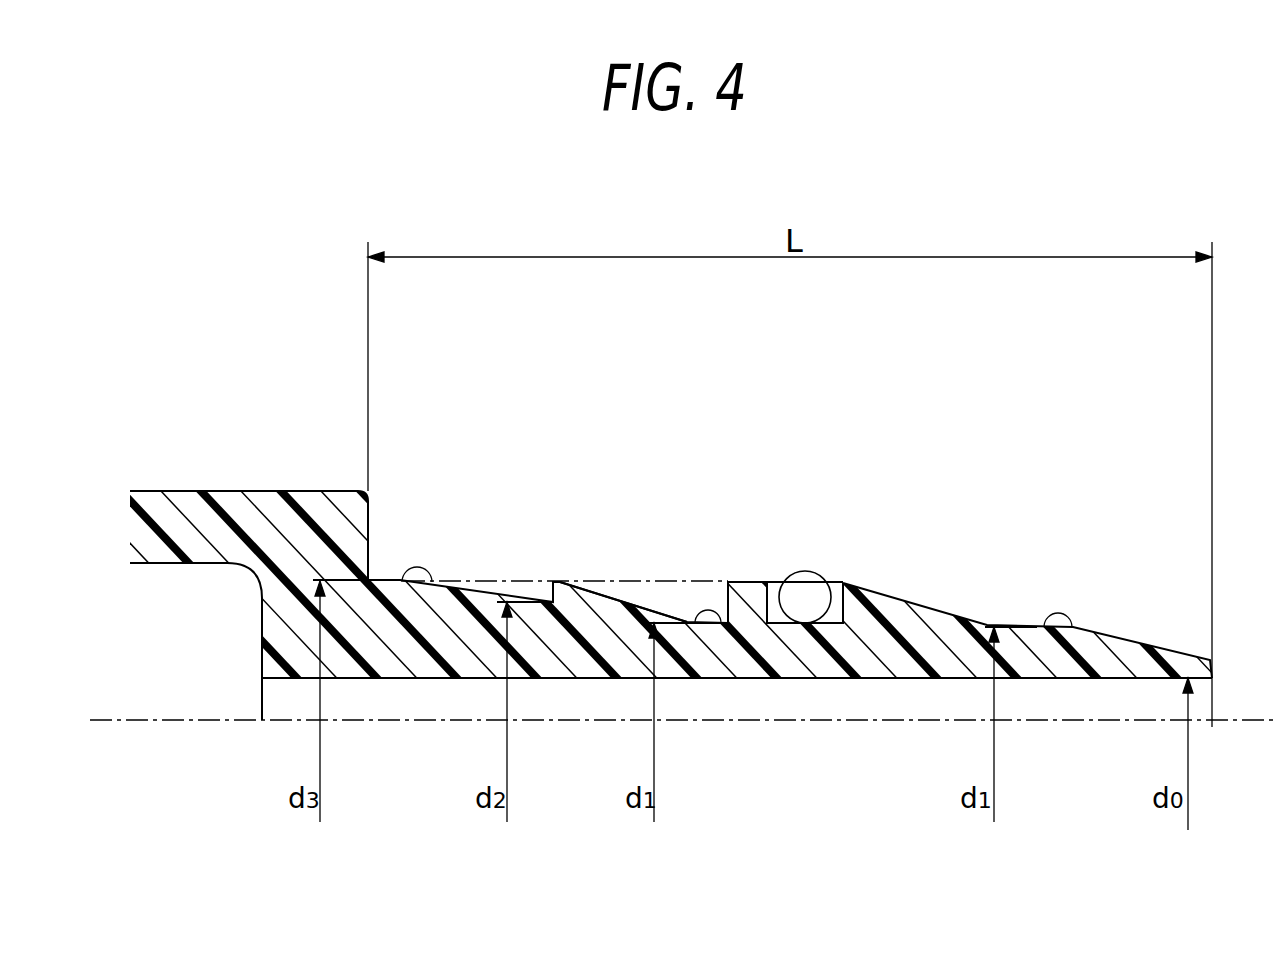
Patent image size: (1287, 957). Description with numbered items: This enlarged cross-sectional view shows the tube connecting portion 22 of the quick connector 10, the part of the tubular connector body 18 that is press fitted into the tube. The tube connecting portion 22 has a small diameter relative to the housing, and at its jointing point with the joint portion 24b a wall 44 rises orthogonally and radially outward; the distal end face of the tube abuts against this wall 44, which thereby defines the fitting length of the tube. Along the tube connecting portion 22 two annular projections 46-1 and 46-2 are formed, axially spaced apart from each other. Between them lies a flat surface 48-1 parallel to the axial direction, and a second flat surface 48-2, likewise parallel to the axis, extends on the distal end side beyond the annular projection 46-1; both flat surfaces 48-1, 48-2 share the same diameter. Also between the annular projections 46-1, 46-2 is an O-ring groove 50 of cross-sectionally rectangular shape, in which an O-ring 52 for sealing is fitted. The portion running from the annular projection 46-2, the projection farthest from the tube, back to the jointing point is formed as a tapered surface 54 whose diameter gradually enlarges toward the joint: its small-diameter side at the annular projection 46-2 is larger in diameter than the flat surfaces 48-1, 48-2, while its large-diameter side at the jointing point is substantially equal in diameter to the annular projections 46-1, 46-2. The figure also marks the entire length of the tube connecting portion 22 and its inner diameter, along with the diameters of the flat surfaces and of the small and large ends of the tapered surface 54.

The quick connector 10 is at (802, 380).
The connector body 18 is at (694, 469).
The tube connecting portion 22 is at (627, 582).
The joint portion 24b is at (256, 476).
The wall 44 is at (368, 522).
The annular projection 46-1 is at (852, 575).
The annular projection 46-2 is at (560, 582).
The flat surface 48-1 is at (700, 618).
The flat surface 48-2 is at (1043, 624).
The O-ring groove 50 is at (779, 582).
The O-ring 52 is at (808, 592).
The tapered surface 54 is at (400, 582).